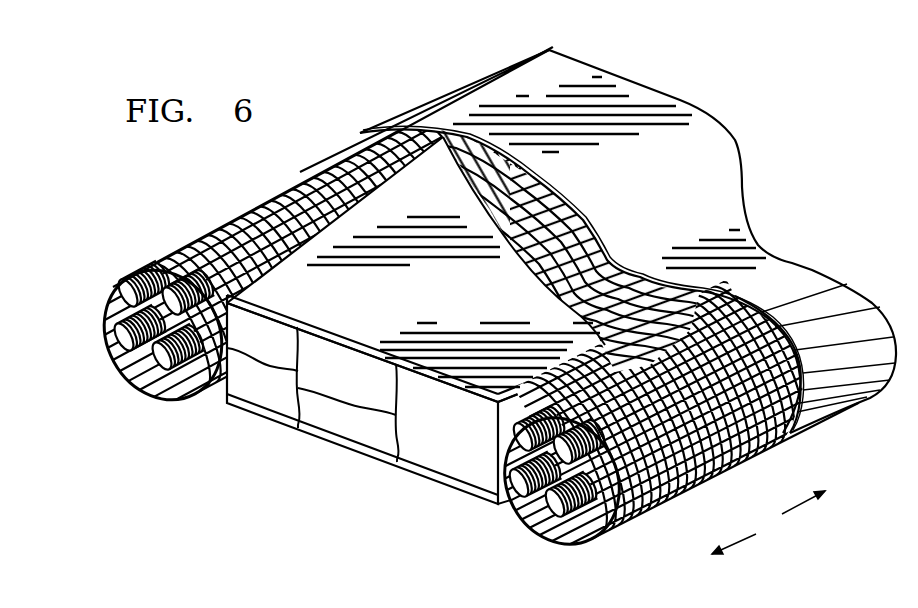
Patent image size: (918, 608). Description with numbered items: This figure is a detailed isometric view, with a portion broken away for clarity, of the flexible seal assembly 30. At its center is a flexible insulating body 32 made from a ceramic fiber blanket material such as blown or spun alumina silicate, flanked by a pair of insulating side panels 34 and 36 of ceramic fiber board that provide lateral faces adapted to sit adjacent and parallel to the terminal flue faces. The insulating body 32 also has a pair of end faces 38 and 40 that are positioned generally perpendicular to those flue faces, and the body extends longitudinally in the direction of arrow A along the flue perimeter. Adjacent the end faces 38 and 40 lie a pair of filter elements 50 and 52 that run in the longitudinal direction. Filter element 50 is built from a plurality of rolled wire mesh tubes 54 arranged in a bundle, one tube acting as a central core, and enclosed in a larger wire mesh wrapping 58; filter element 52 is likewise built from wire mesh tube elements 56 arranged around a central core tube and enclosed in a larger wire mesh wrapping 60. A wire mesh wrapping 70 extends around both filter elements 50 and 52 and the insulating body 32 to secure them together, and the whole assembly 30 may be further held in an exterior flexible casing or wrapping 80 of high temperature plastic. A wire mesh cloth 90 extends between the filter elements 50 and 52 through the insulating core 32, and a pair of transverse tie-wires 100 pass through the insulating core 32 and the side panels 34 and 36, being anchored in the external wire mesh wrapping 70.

The flexible seal assembly 30 is at (700, 57).
The flexible insulating body 32 is at (449, 416).
The insulating side panel 34 is at (313, 320).
The insulating side panel 36 is at (315, 442).
The end face 38 is at (205, 393).
The end face 40 is at (470, 498).
The filter element 50 is at (98, 297).
The filter element 52 is at (677, 414).
The wire mesh tubes 54 is at (140, 342).
The wire mesh tube elements 56 is at (538, 478).
The wire mesh wrapping 58 is at (226, 233).
The wire mesh wrapping 60 is at (690, 482).
The wire mesh wrapping 70 is at (358, 140).
The exterior flexible casing or wrapping 80 is at (735, 168).
The wire mesh cloth 90 is at (382, 428).
The transverse tie-wires 100 is at (248, 394).